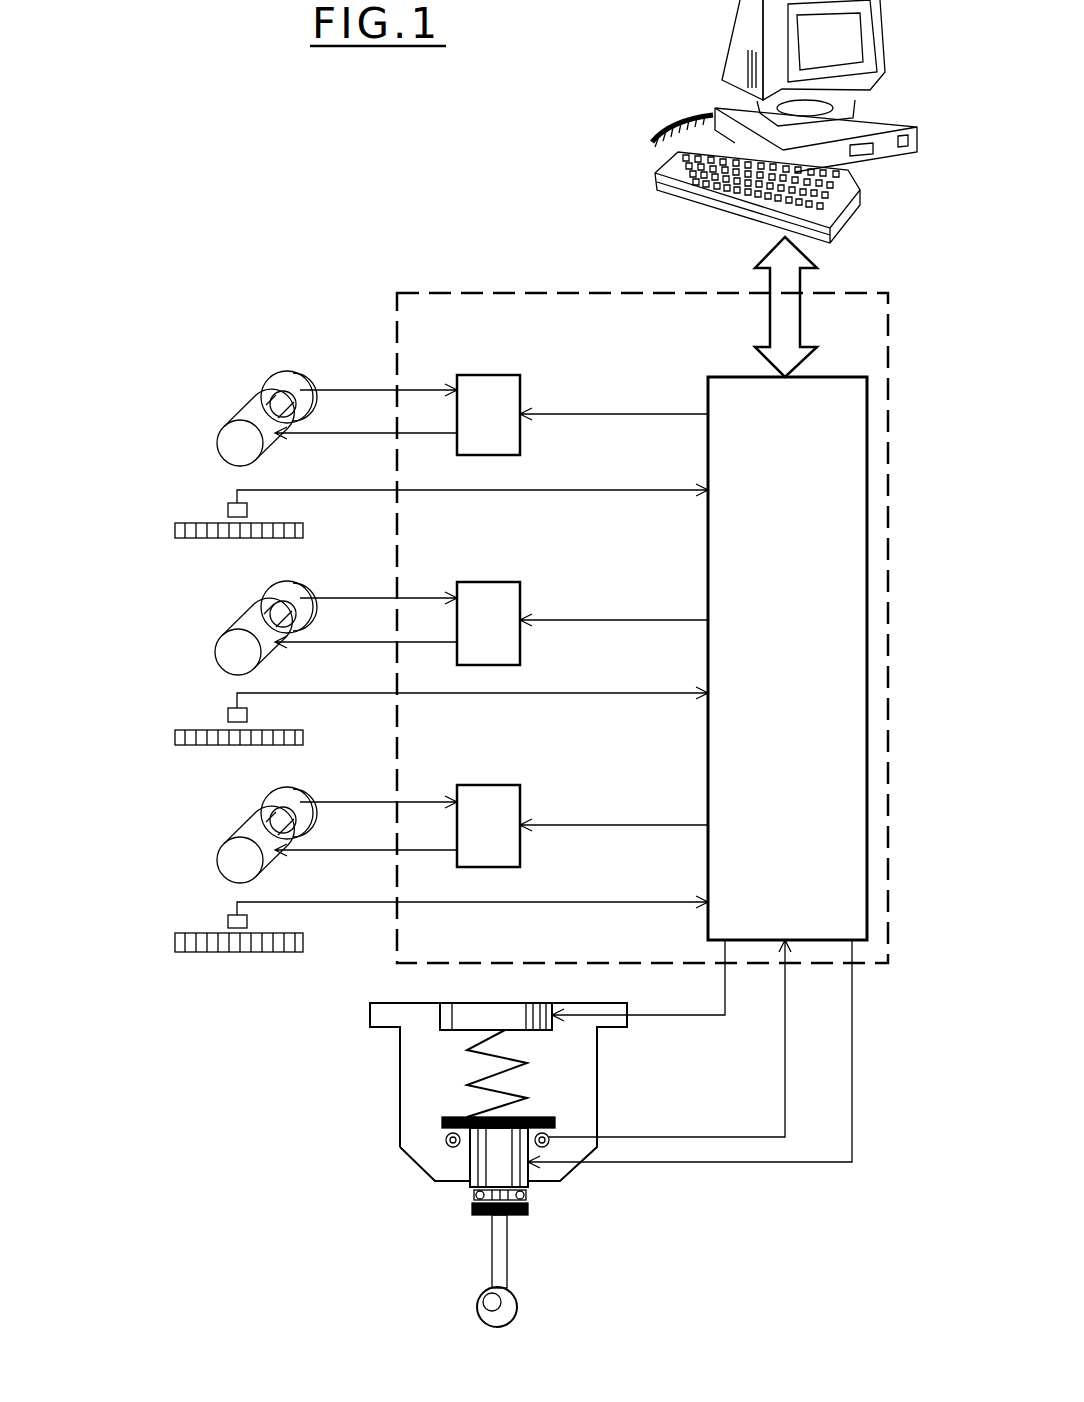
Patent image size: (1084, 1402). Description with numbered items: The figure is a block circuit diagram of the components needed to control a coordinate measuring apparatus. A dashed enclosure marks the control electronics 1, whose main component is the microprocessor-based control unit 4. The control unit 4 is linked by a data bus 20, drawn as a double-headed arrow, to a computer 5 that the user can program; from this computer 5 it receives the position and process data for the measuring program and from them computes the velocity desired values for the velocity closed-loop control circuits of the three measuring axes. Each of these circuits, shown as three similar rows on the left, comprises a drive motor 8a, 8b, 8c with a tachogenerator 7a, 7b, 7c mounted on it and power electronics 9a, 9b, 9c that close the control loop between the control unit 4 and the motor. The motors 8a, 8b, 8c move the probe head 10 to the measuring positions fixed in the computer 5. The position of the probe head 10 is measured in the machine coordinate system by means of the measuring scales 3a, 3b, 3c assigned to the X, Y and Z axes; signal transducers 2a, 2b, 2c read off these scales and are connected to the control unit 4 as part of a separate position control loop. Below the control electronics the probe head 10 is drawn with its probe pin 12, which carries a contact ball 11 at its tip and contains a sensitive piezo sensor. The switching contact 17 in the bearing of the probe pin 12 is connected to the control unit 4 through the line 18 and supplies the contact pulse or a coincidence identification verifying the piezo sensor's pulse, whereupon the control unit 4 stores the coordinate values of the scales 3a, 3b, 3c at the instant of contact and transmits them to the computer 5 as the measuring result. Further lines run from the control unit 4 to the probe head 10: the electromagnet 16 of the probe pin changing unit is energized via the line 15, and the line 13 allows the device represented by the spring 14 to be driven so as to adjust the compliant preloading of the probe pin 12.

The control electronics 1 is at (411, 292).
The signal transducer 2a is at (228, 510).
The signal transducer 2b is at (228, 714).
The signal transducer 2c is at (228, 921).
The measuring scale 3a is at (177, 538).
The measuring scale 3b is at (262, 800).
The measuring scale 3c is at (230, 952).
The control unit 4 is at (842, 736).
The computer 5 is at (880, 120).
The tachogenerator 7a is at (287, 372).
The tachogenerator 7b is at (298, 584).
The tachogenerator 7c is at (302, 790).
The drive motor 8a is at (233, 440).
The drive motor 8b is at (227, 652).
The drive motor 8c is at (228, 862).
The power electronics 9a is at (490, 395).
The power electronics 9b is at (490, 600).
The power electronics 9c is at (490, 803).
The probe head 10 is at (588, 1096).
The stylus ball 11 is at (518, 1310).
The probe pin 12 is at (507, 1250).
The line 13 is at (653, 1016).
The spring 14 is at (467, 1083).
The line 15 is at (788, 1165).
The electromagnet 16 is at (517, 1170).
The switching contact 17 is at (446, 1140).
The line 18 is at (691, 1140).
The data bus 20 is at (818, 288).